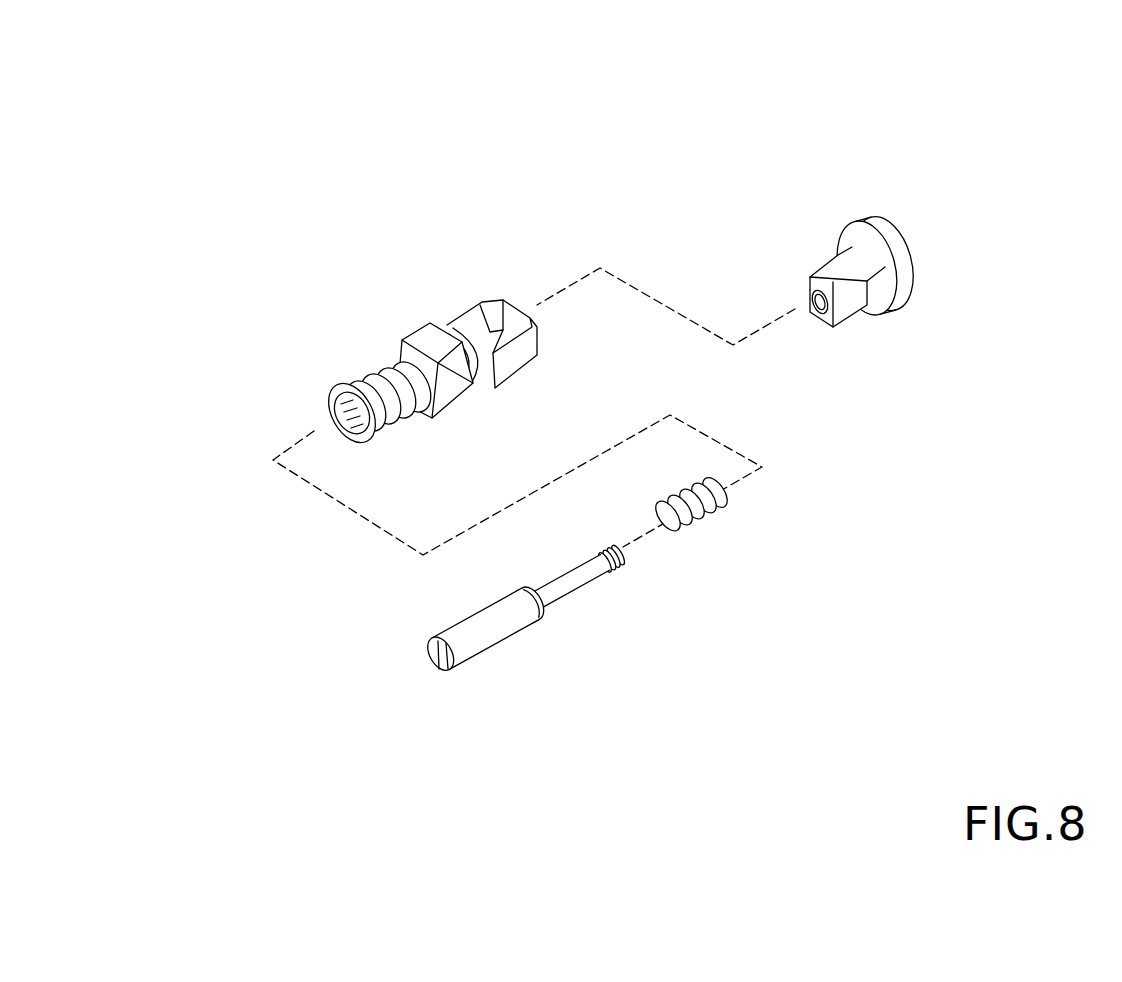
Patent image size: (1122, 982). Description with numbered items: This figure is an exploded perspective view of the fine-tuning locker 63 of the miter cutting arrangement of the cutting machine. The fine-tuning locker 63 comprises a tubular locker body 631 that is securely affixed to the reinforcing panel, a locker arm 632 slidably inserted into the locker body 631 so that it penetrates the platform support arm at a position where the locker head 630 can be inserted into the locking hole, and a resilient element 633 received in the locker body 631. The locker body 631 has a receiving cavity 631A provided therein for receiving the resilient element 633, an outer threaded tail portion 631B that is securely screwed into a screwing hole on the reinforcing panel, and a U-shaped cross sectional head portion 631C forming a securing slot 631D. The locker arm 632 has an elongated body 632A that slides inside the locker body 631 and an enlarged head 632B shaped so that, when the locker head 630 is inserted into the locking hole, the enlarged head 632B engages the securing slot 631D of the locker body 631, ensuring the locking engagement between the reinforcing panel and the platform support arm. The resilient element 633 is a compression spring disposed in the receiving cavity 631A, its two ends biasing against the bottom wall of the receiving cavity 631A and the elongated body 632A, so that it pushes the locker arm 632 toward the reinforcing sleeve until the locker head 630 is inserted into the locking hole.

The fine-tuning locker 63 is at (880, 705).
The locker head 630 is at (432, 676).
The locker body 631 is at (345, 170).
The receiving cavity 631A is at (348, 428).
The outer threaded tail portion 631B is at (377, 383).
The U-shaped cross sectional head portion 631C is at (512, 352).
The securing slot 631D is at (495, 320).
The locker arm 632 is at (680, 746).
The elongated body 632A is at (520, 610).
The enlarged head 632B is at (900, 310).
The resilient element 633 is at (703, 523).